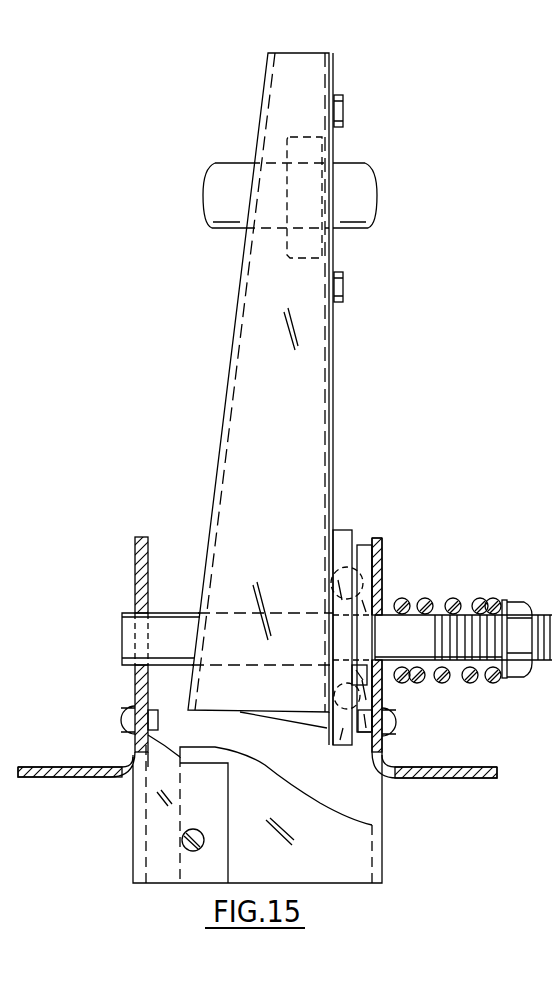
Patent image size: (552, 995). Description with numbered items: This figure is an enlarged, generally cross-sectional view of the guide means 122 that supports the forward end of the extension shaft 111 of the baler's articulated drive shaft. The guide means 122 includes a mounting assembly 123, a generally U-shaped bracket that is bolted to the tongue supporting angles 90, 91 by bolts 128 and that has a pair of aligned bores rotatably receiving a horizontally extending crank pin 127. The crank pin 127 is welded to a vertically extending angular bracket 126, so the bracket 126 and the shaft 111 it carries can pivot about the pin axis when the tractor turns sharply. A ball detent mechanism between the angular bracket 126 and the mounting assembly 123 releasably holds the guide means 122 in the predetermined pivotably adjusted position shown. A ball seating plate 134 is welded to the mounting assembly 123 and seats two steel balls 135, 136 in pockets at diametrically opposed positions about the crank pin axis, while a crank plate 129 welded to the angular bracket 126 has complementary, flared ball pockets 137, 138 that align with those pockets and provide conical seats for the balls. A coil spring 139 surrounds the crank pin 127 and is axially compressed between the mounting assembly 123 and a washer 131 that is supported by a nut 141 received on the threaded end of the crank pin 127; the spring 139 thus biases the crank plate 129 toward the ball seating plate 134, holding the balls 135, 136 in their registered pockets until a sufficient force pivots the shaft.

The tongue supporting angle 90 is at (60, 778).
The tongue supporting angle 91 is at (461, 780).
The extension shaft 111 is at (359, 230).
The guide means 122 is at (306, 399).
The mounting assembly 123 is at (386, 855).
The vertically extending angular bracket 126 is at (317, 343).
The crank pin 127 is at (122, 625).
The bolts 128 is at (118, 720).
The crank plate 129 is at (347, 528).
The washer 131 is at (500, 680).
The ball seating plate 134 is at (362, 543).
The steel ball 135 is at (374, 572).
The steel ball 136 is at (340, 698).
The ball pocket 137 is at (333, 592).
The ball pocket 138 is at (351, 678).
The coil spring 139 is at (427, 600).
The nut 141 is at (512, 606).